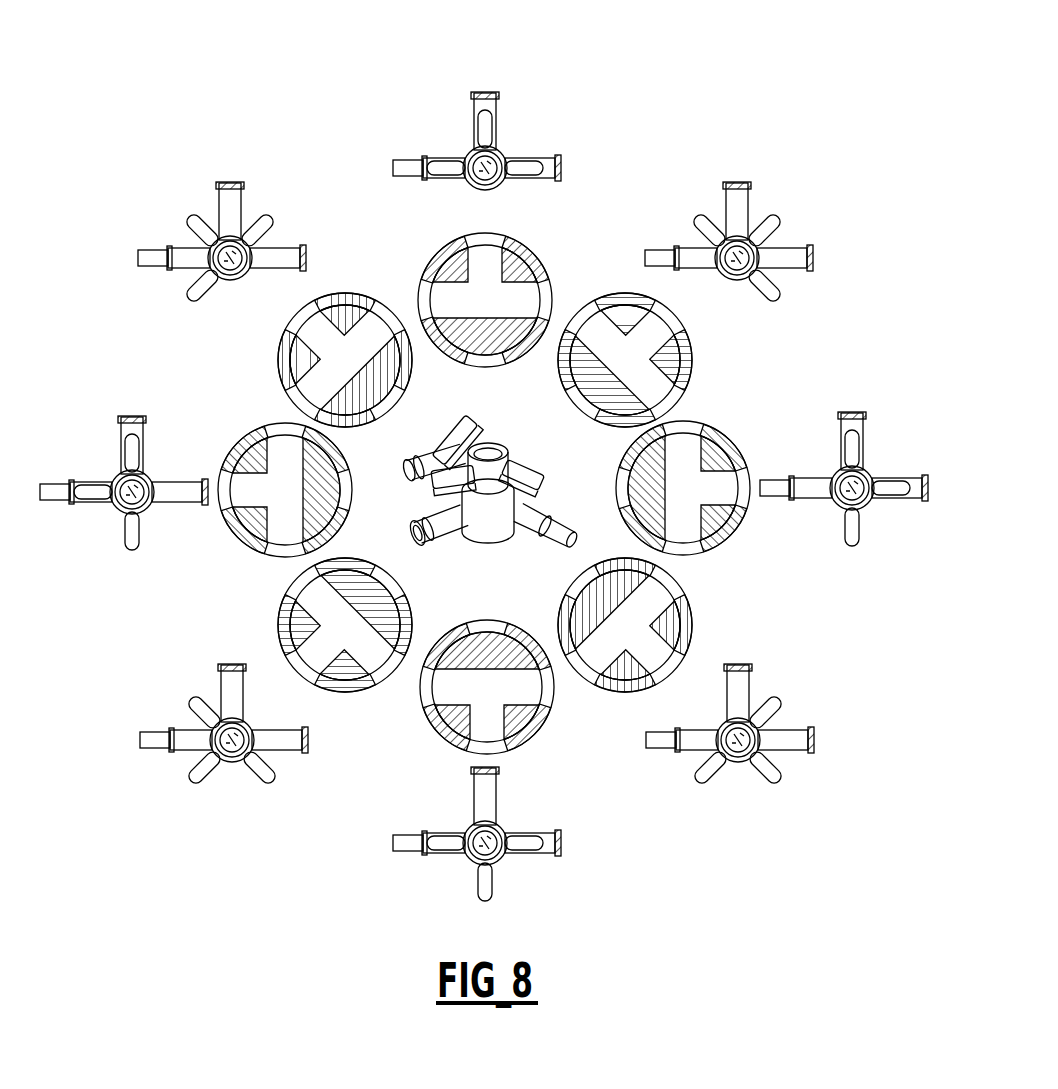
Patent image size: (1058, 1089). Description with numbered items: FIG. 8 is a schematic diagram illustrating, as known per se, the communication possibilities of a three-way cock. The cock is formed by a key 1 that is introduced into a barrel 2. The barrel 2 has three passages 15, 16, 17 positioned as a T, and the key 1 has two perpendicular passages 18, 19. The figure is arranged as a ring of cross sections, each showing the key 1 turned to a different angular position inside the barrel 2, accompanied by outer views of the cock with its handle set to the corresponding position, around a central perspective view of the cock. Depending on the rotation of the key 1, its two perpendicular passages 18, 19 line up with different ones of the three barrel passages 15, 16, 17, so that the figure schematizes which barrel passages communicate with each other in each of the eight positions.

The key 1 is at (530, 248).
The barrel 2 is at (432, 265).
The passage 15 is at (402, 167).
The passage 16 is at (562, 170).
The passage 17 is at (478, 92).
The passage 18 is at (466, 174).
The passage 19 is at (488, 160).